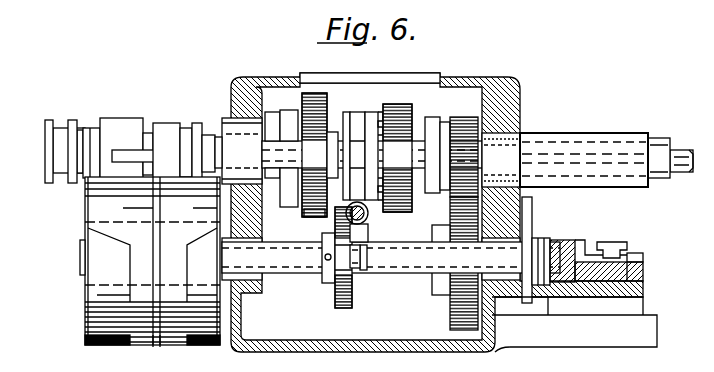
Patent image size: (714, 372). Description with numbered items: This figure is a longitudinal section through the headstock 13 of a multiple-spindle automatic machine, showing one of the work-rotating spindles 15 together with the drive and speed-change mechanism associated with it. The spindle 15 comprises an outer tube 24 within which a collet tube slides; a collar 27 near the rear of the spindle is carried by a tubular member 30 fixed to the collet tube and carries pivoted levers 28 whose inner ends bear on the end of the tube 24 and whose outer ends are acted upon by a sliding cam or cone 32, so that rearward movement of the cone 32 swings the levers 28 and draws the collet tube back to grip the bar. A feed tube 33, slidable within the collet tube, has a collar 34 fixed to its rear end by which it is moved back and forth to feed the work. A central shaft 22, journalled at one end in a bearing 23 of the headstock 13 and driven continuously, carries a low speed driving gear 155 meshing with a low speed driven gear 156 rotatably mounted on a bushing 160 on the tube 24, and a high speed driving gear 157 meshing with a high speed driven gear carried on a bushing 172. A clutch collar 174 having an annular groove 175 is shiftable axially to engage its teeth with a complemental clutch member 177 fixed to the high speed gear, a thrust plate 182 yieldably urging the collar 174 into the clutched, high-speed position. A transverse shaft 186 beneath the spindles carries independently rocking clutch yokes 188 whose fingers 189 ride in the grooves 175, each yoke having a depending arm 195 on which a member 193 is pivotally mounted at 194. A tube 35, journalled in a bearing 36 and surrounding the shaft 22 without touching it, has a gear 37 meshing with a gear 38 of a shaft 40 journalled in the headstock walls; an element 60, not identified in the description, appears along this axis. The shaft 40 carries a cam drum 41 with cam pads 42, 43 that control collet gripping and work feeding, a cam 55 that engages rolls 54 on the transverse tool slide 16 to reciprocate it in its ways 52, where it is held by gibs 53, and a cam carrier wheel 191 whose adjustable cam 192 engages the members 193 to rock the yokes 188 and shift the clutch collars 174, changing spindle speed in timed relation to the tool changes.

The headstock 13 is at (529, 92).
The work rotating spindle 15 is at (271, 100).
The transverse tool slide 16 is at (637, 242).
The central shaft 22 is at (690, 172).
The bearing 23 is at (242, 151).
The outer tube 24 is at (205, 135).
The collar 27 is at (123, 120).
The levers 28 is at (153, 152).
The tubular member 30 is at (90, 135).
The cam or cone 32 is at (177, 125).
The feed tube 33 is at (85, 157).
The collar 34 is at (57, 135).
The tube 35 is at (663, 133).
The bearing 36 is at (506, 175).
The gear 37 is at (460, 118).
The gear 38 is at (448, 310).
The shaft 40 is at (303, 272).
The cam drum 41 is at (143, 343).
The cam pad 42 is at (192, 265).
The cam pad 43 is at (95, 280).
The ways 52 is at (645, 272).
The gibs 53 is at (645, 258).
The rolls 54 is at (552, 240).
The cam 55 is at (532, 217).
The output shaft 60 is at (610, 134).
The low speed driving gear 155 is at (288, 158).
The low speed driven gear 156 is at (312, 214).
The high speed driving gear 157 is at (408, 113).
The bushing 160 is at (279, 112).
The bushing 172 is at (427, 127).
The clutch collar 174 is at (374, 118).
The annular groove 175 is at (357, 112).
The complemental clutch member 177 is at (396, 103).
The thrust plate 182 is at (330, 108).
The shaft 186 is at (368, 228).
The clutch yoke 188 is at (368, 210).
The fingers 189 is at (345, 118).
The cam carrier wheel 191 is at (348, 306).
The cam 192 is at (353, 300).
The members 193 is at (300, 263).
The pivot 194 is at (368, 265).
The depending arms 195 is at (363, 236).